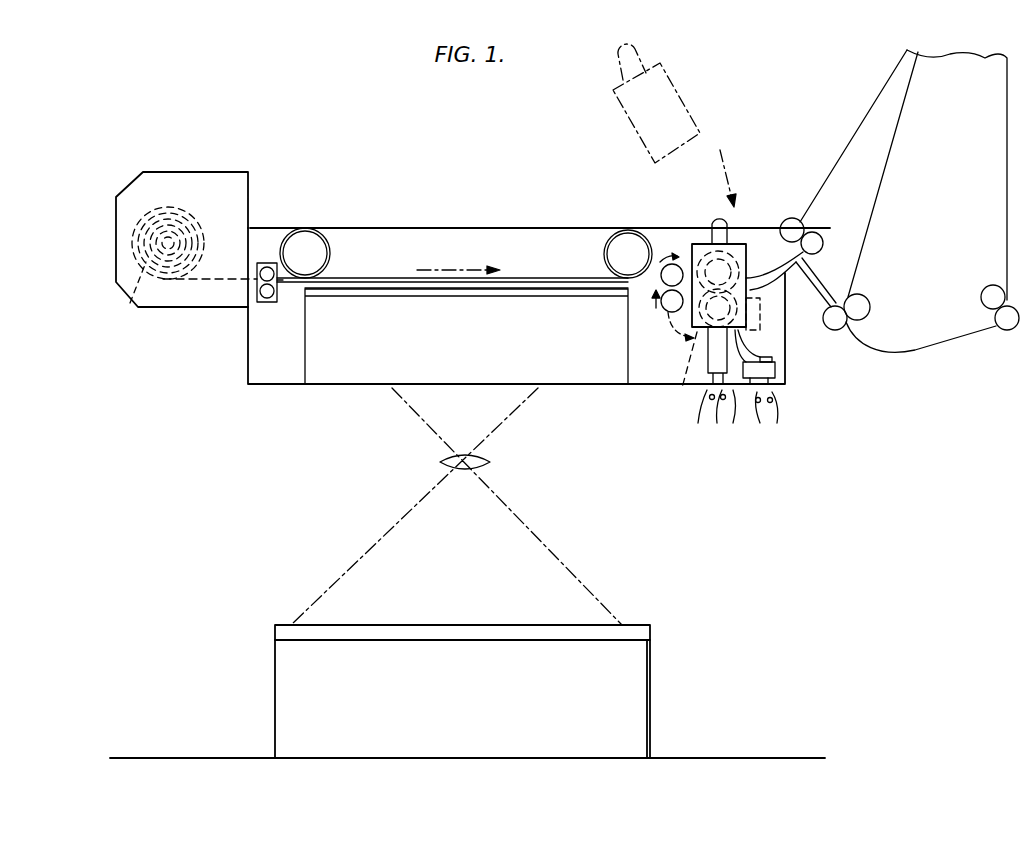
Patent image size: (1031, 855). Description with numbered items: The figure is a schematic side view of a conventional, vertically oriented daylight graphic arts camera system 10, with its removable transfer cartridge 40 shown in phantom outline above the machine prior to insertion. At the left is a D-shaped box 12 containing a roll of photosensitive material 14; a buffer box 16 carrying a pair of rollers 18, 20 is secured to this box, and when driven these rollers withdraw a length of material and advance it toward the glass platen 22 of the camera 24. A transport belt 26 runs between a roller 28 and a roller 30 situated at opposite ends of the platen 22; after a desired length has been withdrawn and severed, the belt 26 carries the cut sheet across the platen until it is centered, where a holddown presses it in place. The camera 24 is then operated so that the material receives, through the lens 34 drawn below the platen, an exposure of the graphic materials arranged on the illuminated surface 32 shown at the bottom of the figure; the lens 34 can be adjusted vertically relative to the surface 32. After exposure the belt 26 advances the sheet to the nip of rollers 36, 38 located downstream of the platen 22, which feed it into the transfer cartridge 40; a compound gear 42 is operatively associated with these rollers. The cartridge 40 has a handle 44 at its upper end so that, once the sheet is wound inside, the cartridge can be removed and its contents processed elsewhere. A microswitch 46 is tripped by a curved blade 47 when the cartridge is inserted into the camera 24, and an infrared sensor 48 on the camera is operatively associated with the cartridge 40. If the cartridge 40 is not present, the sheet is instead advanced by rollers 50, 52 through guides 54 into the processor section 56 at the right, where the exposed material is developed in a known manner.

The graphic arts camera system 10 is at (186, 397).
The D-shaped box 12 is at (237, 175).
The roll of photosensitive material 14 is at (128, 310).
The buffer box 16 is at (260, 267).
The roller 18 is at (280, 284).
The roller 20 is at (263, 292).
The platen 22 is at (531, 293).
The camera 24 is at (647, 377).
The transport belt 26 is at (357, 277).
The roller 28 is at (300, 237).
The roller 30 is at (615, 250).
The illuminated surface 32 is at (447, 633).
The lens 34 is at (478, 465).
The roller 36 is at (676, 265).
The roller 38 is at (662, 310).
The transfer cartridge 40 is at (750, 313).
The compound gear 42 is at (685, 392).
The handle 44 is at (723, 227).
The microswitch 46 is at (776, 370).
The curved blade 47 is at (745, 340).
The infrared sensor 48 is at (738, 421).
The roller 50 is at (791, 218).
The roller 52 is at (820, 238).
The guides 54 is at (822, 270).
The processor section 56 is at (917, 348).